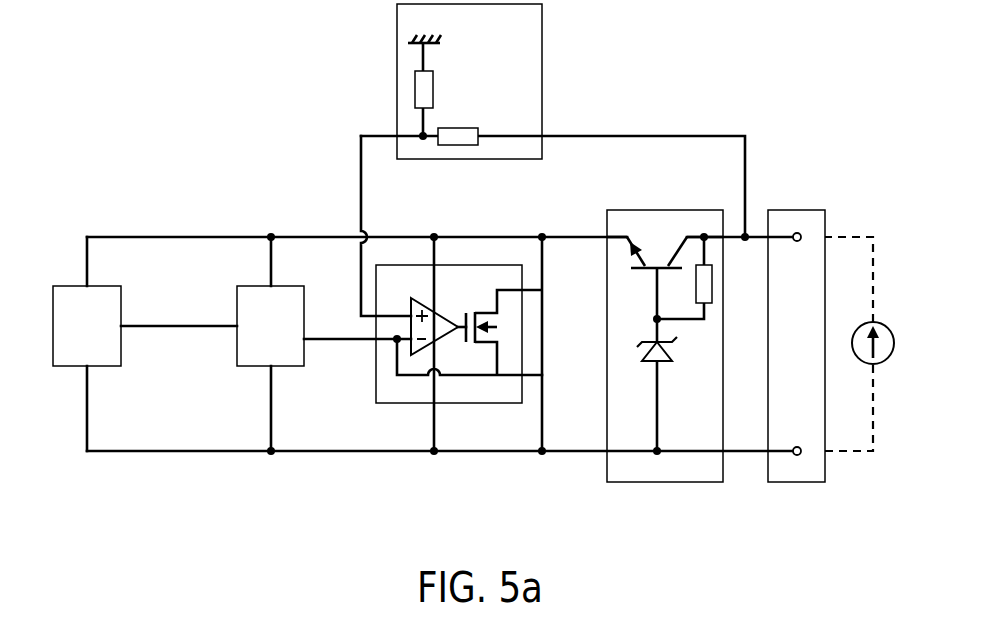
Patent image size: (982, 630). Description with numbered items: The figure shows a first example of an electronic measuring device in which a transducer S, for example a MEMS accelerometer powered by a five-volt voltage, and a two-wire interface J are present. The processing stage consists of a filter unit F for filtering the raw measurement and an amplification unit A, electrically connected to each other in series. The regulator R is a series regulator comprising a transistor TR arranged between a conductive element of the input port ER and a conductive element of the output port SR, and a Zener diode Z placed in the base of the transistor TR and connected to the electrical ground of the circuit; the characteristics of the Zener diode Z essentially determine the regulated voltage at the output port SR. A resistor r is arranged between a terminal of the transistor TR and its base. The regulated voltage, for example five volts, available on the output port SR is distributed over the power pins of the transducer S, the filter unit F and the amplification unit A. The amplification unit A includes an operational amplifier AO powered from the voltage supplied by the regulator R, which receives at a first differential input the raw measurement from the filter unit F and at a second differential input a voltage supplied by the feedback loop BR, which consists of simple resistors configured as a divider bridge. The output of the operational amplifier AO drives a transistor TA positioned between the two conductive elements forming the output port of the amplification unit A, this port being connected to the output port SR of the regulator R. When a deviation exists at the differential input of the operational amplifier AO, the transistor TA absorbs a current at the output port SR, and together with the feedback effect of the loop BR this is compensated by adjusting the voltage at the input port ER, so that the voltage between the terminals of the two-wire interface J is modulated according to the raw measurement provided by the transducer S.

The transducer S is at (60, 285).
The filter unit F is at (248, 285).
The amplification unit A is at (429, 391).
The operational amplifier AO is at (398, 344).
The transistor TA is at (498, 355).
The feedback loop BR is at (397, 33).
The regulator R is at (673, 303).
The transistor TR is at (657, 244).
The resistor r is at (707, 275).
The output port SR is at (601, 286).
The input port ER is at (719, 286).
The Zener diode Z is at (648, 366).
The two-wire interface J is at (797, 482).